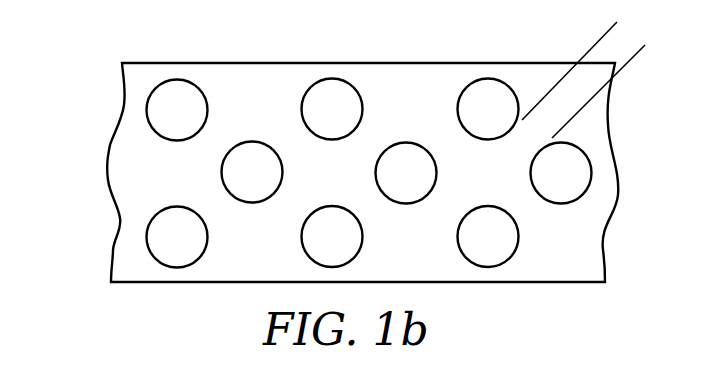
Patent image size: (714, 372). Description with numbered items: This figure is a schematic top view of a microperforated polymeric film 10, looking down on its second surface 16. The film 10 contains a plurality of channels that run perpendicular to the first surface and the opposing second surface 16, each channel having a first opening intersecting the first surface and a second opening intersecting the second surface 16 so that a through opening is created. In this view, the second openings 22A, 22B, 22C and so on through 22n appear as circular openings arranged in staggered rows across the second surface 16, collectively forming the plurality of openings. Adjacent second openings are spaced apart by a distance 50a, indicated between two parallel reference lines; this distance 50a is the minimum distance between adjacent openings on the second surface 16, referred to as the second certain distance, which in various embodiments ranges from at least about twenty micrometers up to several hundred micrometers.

The microperforated polymeric film 10 is at (86, 95).
The second surface 16 is at (130, 192).
The second opening 22A is at (178, 92).
The second opening 22B is at (333, 92).
The second opening 22C is at (490, 92).
The second opening 22n is at (498, 248).
The distance 50a is at (587, 5).